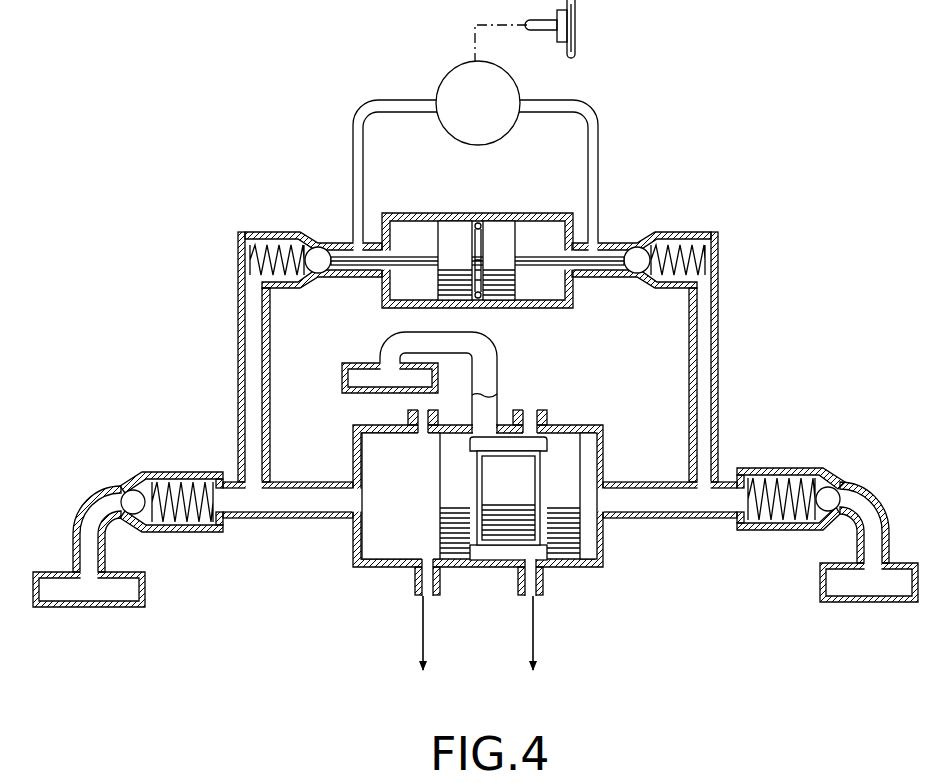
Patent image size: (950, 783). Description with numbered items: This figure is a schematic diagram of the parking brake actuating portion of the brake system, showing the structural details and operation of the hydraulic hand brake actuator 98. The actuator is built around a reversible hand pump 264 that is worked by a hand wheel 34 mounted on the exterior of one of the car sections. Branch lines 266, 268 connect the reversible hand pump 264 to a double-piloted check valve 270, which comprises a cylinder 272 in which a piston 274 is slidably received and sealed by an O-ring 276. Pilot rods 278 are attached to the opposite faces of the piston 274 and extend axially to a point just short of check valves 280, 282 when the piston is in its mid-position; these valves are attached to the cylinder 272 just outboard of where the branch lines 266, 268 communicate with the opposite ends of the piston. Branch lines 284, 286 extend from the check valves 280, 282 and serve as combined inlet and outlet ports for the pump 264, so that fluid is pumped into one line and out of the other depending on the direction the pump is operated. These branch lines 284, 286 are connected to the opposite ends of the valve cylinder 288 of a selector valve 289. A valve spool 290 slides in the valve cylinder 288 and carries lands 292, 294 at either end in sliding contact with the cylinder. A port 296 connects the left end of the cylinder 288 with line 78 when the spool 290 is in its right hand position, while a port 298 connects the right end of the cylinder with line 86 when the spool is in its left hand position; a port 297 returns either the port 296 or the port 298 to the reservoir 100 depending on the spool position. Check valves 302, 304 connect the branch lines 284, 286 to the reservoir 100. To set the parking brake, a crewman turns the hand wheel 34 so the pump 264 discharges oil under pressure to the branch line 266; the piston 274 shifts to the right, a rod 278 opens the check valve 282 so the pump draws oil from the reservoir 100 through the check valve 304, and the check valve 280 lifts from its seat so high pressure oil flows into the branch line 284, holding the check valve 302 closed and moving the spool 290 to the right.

The hand wheel 34 is at (576, 23).
The line 78 is at (422, 630).
The line 86 is at (534, 636).
The hydraulic hand brake actuator 98 is at (385, 72).
The reservoir 100 is at (146, 594).
The reversible hand pump 264 is at (512, 85).
The branch line 266 is at (362, 114).
The branch line 268 is at (594, 118).
The double-piloted check valve 270 is at (479, 328).
The cylinder 272 is at (382, 302).
The piston 274 is at (455, 226).
The O-ring 276 is at (479, 221).
The pilot rods 278 is at (399, 252).
The check valve 280 is at (270, 231).
The check valve 282 is at (698, 230).
The branch line 284 is at (287, 493).
The branch line 286 is at (696, 452).
The valve cylinder 288 is at (360, 568).
The selector valve 289 is at (491, 528).
The valve spool 290 is at (521, 487).
The land 292 is at (440, 456).
The land 294 is at (570, 452).
The port 296 is at (440, 592).
The port 297 is at (497, 425).
The port 298 is at (543, 592).
The check valve 302 is at (178, 471).
The check valve 304 is at (784, 467).